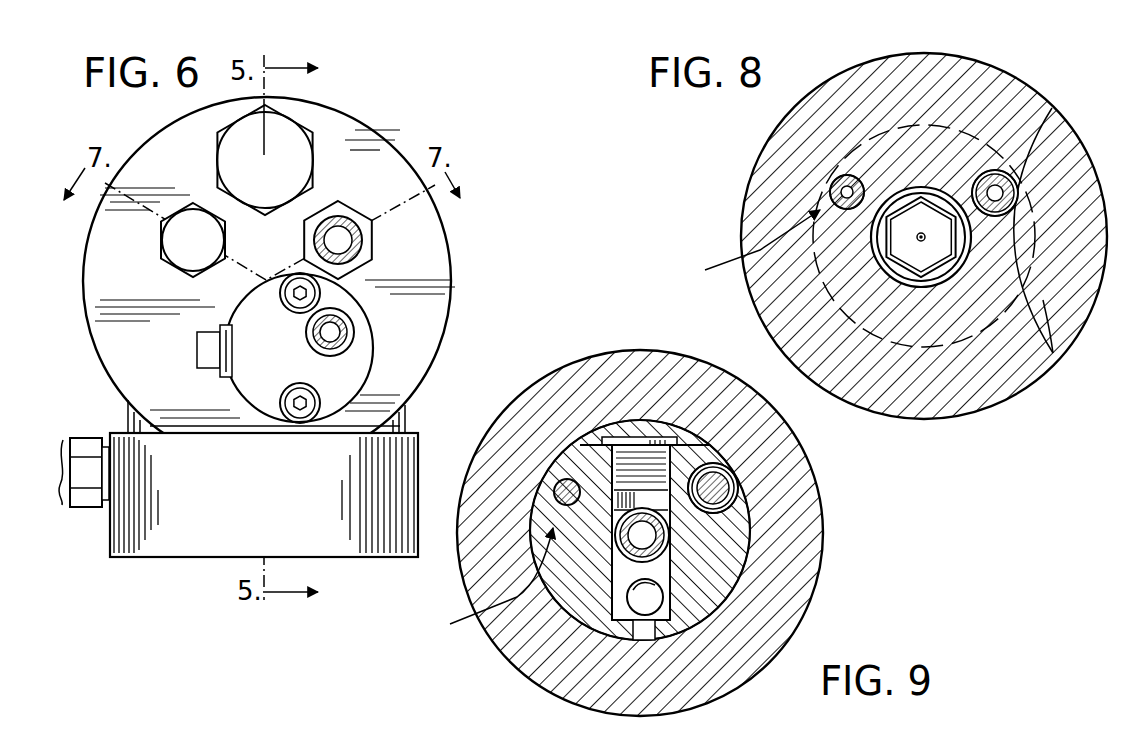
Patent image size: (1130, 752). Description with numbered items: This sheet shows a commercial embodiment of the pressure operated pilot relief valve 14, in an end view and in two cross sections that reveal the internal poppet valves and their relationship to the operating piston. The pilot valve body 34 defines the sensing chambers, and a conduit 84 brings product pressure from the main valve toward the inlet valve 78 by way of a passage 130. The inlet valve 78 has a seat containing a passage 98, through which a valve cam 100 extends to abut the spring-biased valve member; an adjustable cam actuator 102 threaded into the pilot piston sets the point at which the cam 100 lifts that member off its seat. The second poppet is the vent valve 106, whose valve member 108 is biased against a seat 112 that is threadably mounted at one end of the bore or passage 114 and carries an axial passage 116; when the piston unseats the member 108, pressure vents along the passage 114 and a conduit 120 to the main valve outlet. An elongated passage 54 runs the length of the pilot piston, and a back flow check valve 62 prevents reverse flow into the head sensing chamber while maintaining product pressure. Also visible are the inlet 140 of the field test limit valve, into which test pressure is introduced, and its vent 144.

In FIG. 8, the pilot relief valve 14 is at (1020, 397).
In FIG. 9, the pilot relief valve 14 is at (753, 691).
In FIG. 8, the body 34 is at (963, 58).
In FIG. 9, the body 34 is at (688, 357).
In FIG. 9, the elongated passage 54 is at (640, 530).
In FIG. 9, the back flow check valve 62 is at (640, 598).
In FIG. 8, the inlet valve 78 is at (750, 246).
In FIG. 9, the inlet valve 78 is at (489, 584).
In FIG. 6, the conduit 84 is at (62, 508).
In FIG. 8, the passage 98 is at (830, 183).
In FIG. 8, the valve cam 100 is at (833, 177).
In FIG. 9, the adjustable cam actuator 102 is at (562, 482).
In FIG. 8, the vent valve 106 is at (990, 170).
In FIG. 9, the vent valve 106 is at (736, 511).
In FIG. 9, the valve member 108 is at (737, 478).
In FIG. 8, the seat 112 is at (1054, 113).
In FIG. 8, the bore or passage 114 is at (1053, 353).
In FIG. 8, the axial passage 116 is at (1007, 174).
In FIG. 6, the conduit 120 is at (346, 205).
In FIG. 6, the passage 130 is at (237, 491).
In FIG. 6, the inlet 140 is at (197, 353).
In FIG. 6, the vent 144 is at (347, 320).